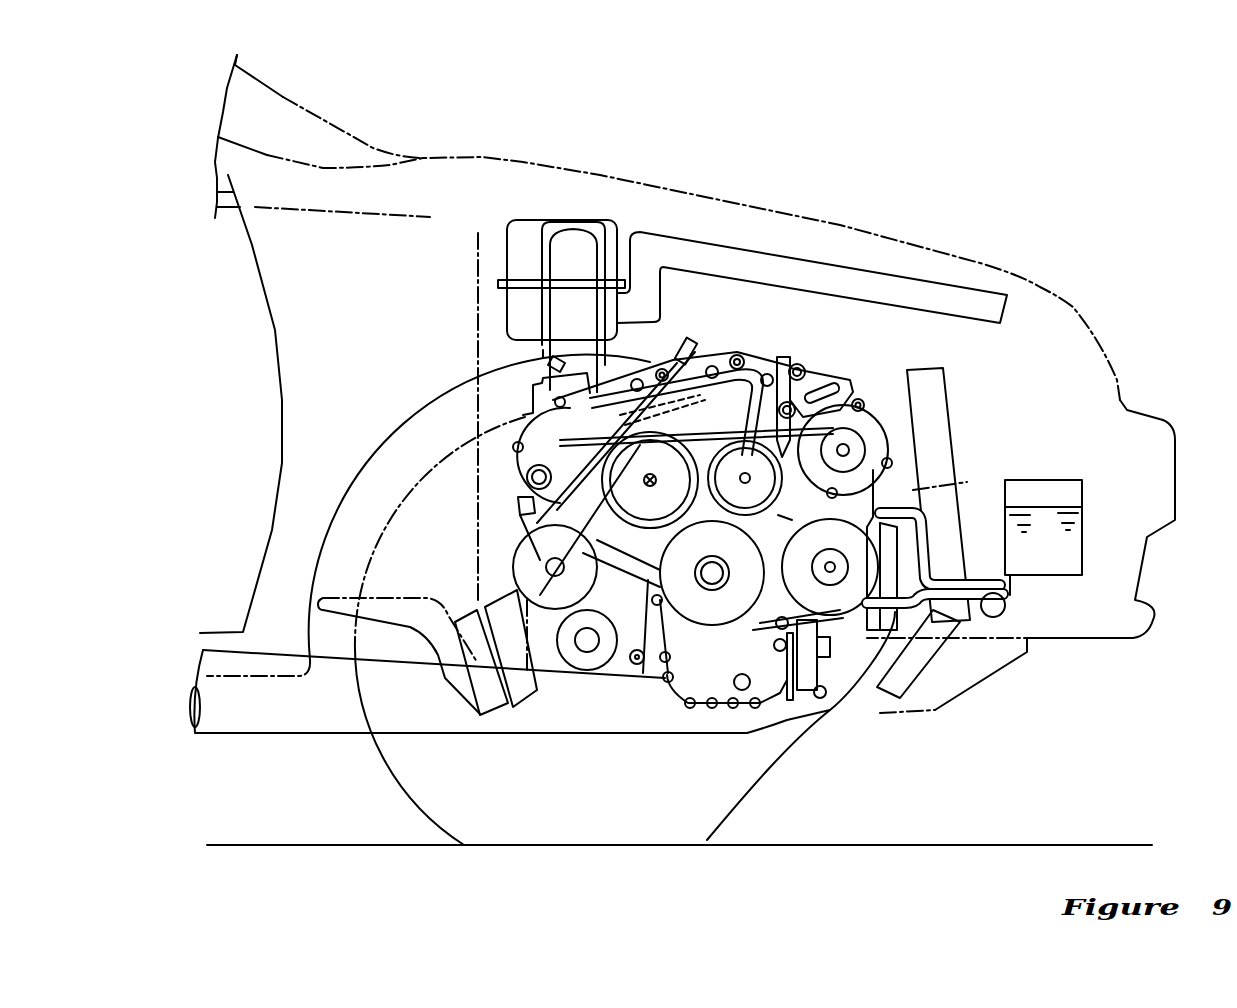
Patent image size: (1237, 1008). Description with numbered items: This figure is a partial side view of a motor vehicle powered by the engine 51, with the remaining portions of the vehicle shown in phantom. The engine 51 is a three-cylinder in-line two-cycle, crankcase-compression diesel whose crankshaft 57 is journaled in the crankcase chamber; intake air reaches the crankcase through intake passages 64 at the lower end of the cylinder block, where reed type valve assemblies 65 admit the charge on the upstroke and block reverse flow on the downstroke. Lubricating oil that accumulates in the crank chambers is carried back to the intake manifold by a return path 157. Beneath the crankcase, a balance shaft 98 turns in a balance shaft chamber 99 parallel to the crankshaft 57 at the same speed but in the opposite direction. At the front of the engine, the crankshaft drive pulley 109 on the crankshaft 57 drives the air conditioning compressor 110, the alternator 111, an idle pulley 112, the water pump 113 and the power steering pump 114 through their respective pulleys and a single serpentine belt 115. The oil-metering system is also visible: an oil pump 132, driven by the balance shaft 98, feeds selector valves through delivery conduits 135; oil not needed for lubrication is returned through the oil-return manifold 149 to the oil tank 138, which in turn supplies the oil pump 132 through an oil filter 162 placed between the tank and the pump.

The internal combustion engine 51 is at (838, 352).
The crankshaft 57 is at (705, 590).
The intake passages 64 is at (767, 250).
The reed type valve assemblies 65 is at (530, 222).
The balance shaft 98 is at (745, 706).
The balance shaft chamber 99 is at (720, 708).
The crankshaft drive pulley 109 is at (655, 662).
The air conditioning compressor 110 is at (847, 633).
The alternator 111 is at (880, 413).
The idle pulley 112 is at (757, 460).
The water pump 113 is at (655, 455).
The power steering pump 114 is at (507, 600).
The serpentine belt 115 is at (580, 667).
The oil pump 132 is at (803, 687).
The delivery conduits 135 is at (940, 592).
The oil tank 138 is at (1082, 490).
The oil-return manifold 149 is at (915, 663).
The return path 157 is at (953, 478).
The oil filter 162 is at (1010, 612).